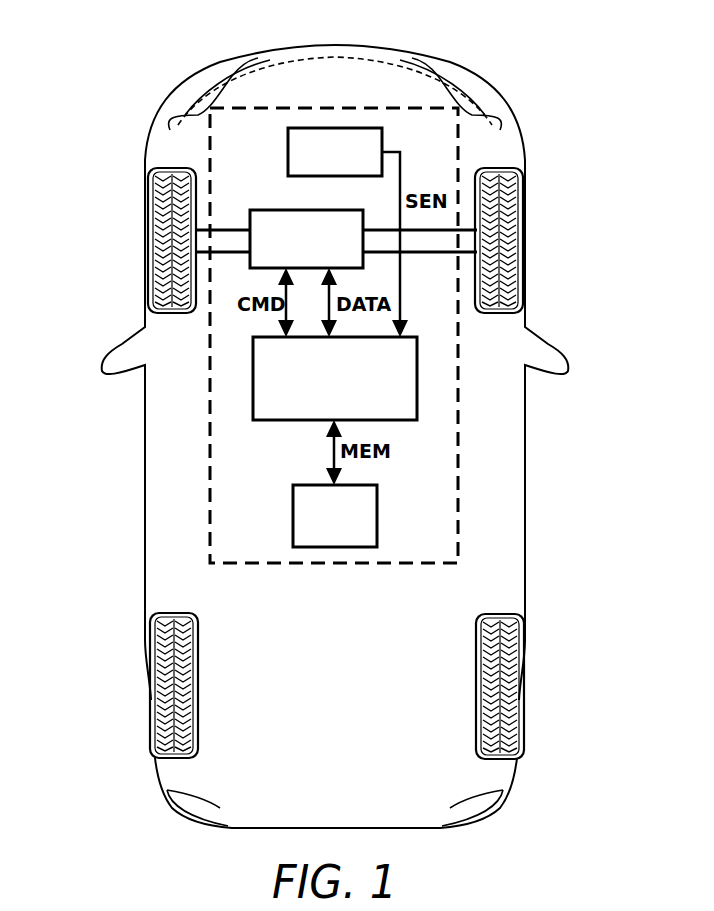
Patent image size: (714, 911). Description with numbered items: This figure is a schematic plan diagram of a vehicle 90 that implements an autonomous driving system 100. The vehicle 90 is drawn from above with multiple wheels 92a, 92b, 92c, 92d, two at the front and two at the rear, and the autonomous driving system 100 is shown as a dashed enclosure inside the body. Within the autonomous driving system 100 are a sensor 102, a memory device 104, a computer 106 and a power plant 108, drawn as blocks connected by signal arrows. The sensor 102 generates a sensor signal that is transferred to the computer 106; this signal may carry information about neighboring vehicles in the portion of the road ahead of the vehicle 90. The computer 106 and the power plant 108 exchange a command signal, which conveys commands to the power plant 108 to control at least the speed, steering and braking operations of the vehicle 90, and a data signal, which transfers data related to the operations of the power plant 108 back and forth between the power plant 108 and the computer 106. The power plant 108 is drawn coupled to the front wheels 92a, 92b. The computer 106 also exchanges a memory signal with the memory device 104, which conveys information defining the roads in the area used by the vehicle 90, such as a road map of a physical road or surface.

The vehicle 90 is at (203, 70).
The wheel 92a is at (146, 218).
The wheel 92b is at (526, 218).
The wheel 92c is at (148, 723).
The wheel 92d is at (527, 723).
The autonomous driving system 100 is at (210, 467).
The sensor 102 is at (335, 152).
The memory device 104 is at (335, 516).
The computer 106 is at (335, 378).
The power plant 108 is at (306, 239).